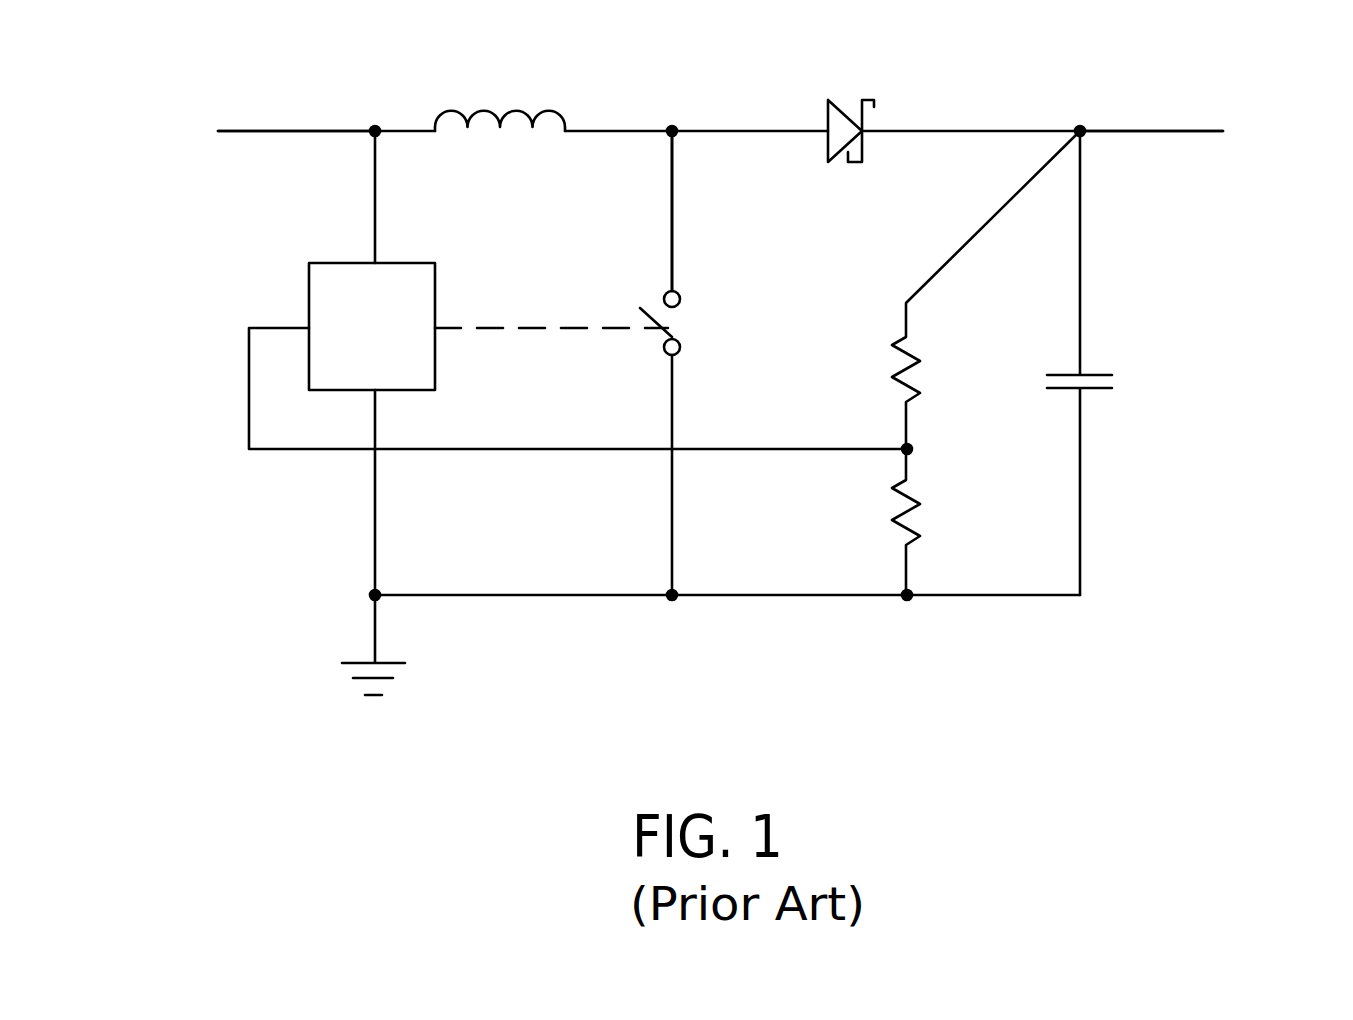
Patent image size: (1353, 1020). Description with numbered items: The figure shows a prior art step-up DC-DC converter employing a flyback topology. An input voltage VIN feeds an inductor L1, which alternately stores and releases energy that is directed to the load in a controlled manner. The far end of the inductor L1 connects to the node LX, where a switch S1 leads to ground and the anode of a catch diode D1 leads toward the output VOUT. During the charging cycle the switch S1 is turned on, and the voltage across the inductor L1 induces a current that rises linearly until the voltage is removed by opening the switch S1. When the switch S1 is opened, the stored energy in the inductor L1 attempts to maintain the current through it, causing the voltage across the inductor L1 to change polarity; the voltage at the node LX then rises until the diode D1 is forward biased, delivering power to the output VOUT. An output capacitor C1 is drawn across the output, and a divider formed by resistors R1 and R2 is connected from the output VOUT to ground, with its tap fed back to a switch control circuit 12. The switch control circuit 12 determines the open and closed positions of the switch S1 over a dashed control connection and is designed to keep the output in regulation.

The switch control circuit 12 is at (435, 285).
The inductor L1 is at (500, 90).
The catch diode D1 is at (850, 100).
The switch S1 is at (696, 363).
The feedback resistor R1 is at (986, 290).
The feedback resistor R2 is at (942, 522).
The output capacitor C1 is at (1114, 363).
The anode node of the catch diode LX is at (683, 183).
The input voltage VIN is at (251, 126).
The output voltage VOUT is at (1213, 119).